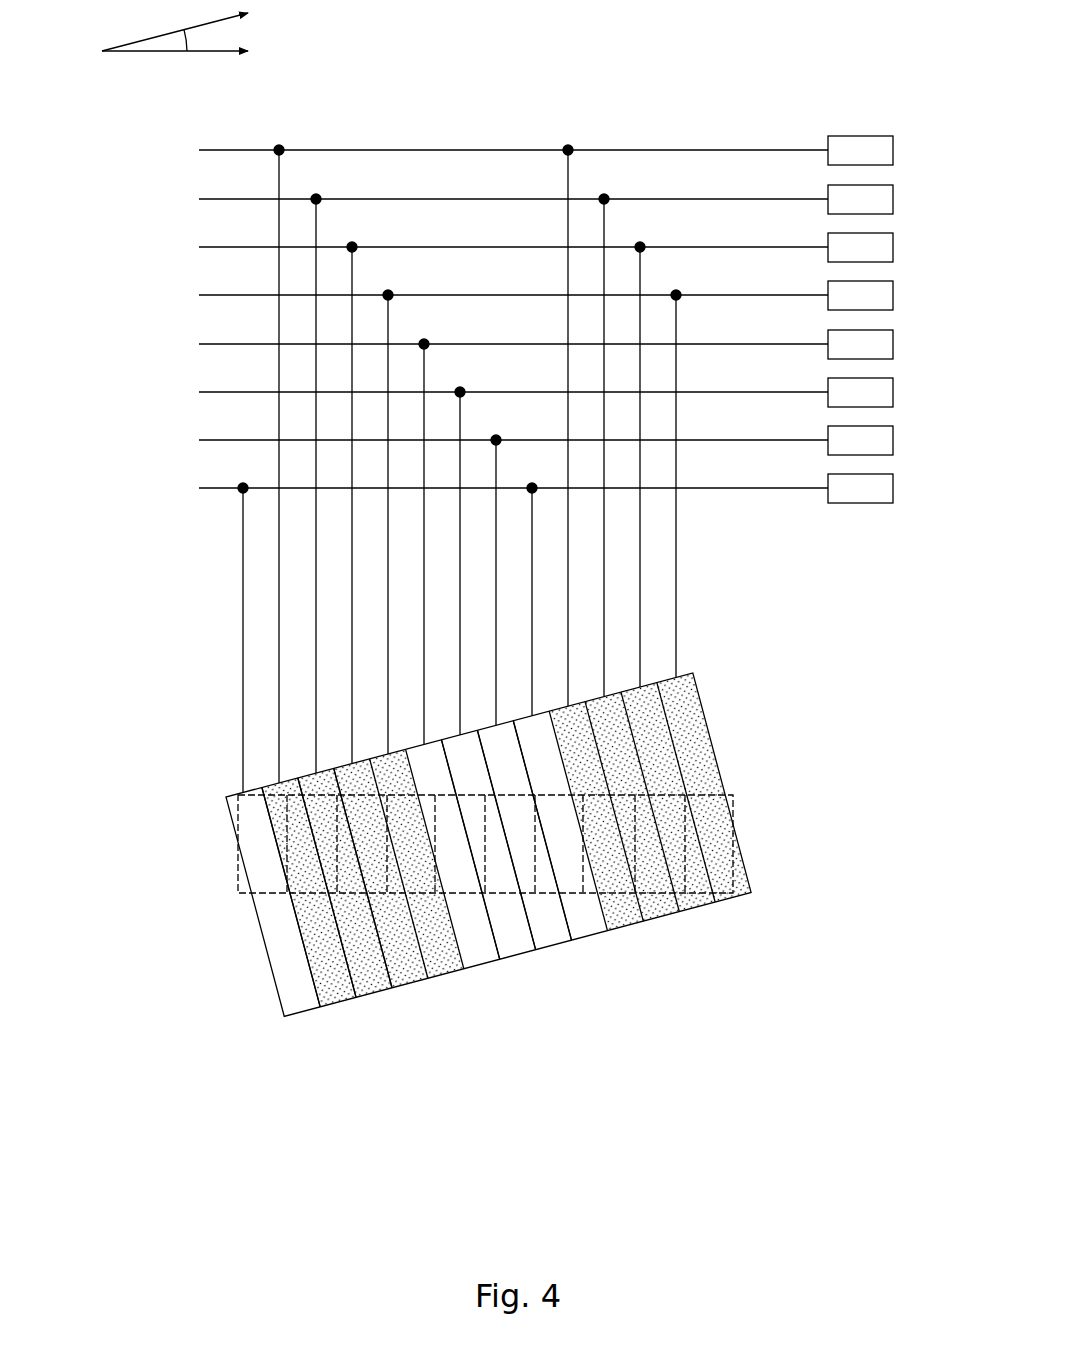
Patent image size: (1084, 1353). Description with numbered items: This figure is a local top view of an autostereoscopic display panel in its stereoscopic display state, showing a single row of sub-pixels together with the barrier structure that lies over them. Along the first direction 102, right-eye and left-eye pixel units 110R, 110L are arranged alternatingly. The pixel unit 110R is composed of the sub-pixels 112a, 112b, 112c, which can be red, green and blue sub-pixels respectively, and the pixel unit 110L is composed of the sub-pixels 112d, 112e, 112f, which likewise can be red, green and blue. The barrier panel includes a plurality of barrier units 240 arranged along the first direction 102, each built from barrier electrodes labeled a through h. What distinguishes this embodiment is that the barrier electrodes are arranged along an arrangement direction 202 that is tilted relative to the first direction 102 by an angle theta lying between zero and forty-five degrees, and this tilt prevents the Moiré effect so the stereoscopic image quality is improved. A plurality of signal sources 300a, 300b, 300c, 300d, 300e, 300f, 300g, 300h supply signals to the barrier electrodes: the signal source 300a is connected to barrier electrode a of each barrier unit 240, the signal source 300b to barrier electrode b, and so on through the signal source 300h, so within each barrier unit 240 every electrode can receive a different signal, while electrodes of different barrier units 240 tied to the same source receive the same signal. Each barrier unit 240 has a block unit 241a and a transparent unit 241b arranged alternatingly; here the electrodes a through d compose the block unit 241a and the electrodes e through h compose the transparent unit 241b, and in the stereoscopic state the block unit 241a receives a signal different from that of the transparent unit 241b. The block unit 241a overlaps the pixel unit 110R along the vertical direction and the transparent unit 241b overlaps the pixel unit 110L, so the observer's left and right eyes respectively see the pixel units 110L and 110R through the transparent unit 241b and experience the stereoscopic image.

The first direction 102 is at (199, 51).
The arrangement direction 202 is at (199, 26).
The signal source 300a is at (546, 459).
The signal source 300b is at (546, 479).
The signal source 300c is at (546, 498).
The signal source 300d is at (546, 517).
The signal source 300e is at (546, 537).
The signal source 300f is at (546, 556).
The signal source 300g is at (546, 575).
The signal source 300h is at (546, 633).
The pixel unit 110R is at (234, 771).
The pixel unit 110L is at (680, 752).
The sub-pixel 112a is at (310, 793).
The sub-pixel 112b is at (350, 765).
The sub-pixel 112c is at (276, 764).
The sub-pixel 112d is at (470, 803).
The sub-pixel 112e is at (510, 807).
The sub-pixel 112f is at (673, 801).
The block unit 241a is at (372, 918).
The transparent unit 241b is at (516, 881).
The barrier unit 240 is at (499, 891).